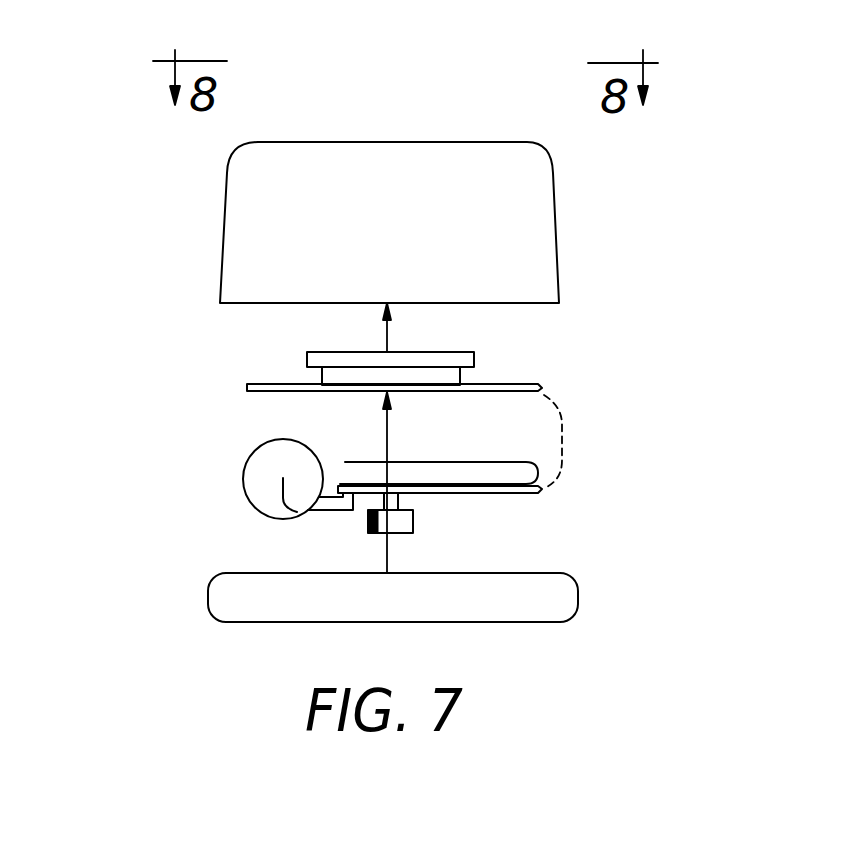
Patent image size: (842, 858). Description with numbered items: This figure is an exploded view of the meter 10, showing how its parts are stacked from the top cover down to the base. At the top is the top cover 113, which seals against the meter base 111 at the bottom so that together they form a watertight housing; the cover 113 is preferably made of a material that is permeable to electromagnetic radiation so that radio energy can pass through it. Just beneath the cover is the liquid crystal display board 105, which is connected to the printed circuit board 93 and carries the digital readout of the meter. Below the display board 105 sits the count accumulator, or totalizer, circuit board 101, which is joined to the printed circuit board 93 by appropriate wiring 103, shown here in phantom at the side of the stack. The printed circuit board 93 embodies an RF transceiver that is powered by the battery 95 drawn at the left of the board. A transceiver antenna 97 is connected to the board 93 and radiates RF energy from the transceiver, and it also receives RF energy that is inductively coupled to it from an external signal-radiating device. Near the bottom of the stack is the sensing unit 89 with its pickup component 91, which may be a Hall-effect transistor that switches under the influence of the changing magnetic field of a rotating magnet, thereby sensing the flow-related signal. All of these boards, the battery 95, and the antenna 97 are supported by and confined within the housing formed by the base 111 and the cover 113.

The meter 10 is at (180, 315).
The top cover 113 is at (553, 206).
The liquid crystal display board 105 is at (475, 352).
The count accumulator circuit board 101 is at (247, 387).
The wiring 103 is at (548, 398).
The transceiver antenna 97 is at (505, 462).
The battery 95 is at (243, 480).
The printed circuit board 93 is at (540, 494).
The pickup component 91 is at (368, 525).
The sensing unit 89 is at (414, 521).
The meter base 111 is at (580, 594).